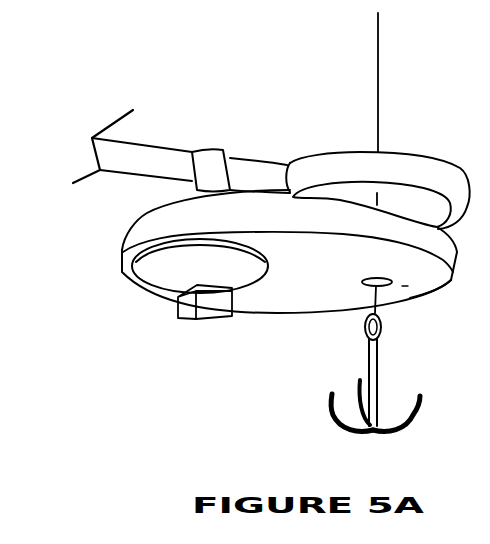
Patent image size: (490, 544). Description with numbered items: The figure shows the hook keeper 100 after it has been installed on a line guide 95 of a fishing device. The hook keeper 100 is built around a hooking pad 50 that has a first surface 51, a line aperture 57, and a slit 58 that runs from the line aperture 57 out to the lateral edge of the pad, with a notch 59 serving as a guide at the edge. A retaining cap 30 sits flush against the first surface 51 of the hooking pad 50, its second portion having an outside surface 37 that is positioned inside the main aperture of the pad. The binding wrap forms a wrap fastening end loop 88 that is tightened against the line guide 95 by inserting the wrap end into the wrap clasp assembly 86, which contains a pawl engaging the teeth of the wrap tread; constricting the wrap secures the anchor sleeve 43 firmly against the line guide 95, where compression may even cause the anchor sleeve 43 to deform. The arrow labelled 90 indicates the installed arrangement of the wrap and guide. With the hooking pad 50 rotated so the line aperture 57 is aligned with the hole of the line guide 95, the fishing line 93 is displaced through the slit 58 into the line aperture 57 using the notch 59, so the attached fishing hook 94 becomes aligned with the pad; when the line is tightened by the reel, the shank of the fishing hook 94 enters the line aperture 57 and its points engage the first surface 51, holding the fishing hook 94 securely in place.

The hook keeper 100 is at (192, 374).
The hooking pad 50 is at (304, 331).
The first surface 51 is at (341, 298).
The line aperture 57 is at (362, 281).
The slit 58 is at (405, 288).
The notch 59 is at (428, 292).
The retaining cap 30 is at (233, 268).
The wrap clasp assembly 86 is at (179, 313).
The outside surface 37 is at (168, 206).
The anchor sleeve 43 is at (183, 190).
The wrap fastening end loop 88 is at (210, 162).
The attachment assembly 90 is at (301, 103).
The fishing line 93 is at (378, 63).
The fishing hook 94 is at (377, 397).
The line guide 95 is at (418, 170).